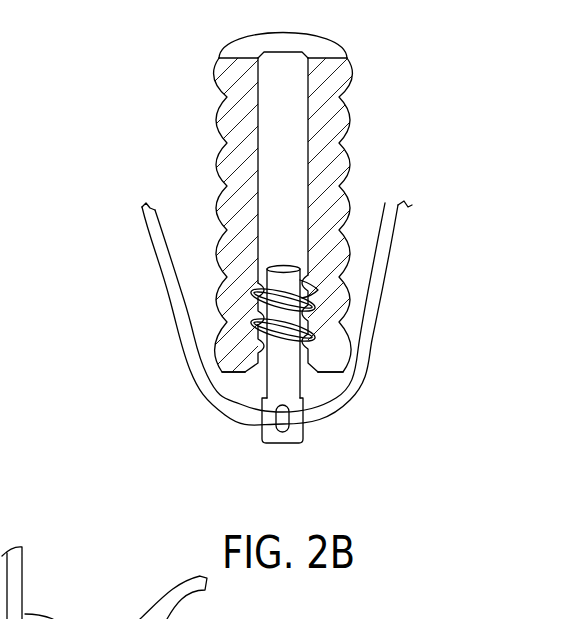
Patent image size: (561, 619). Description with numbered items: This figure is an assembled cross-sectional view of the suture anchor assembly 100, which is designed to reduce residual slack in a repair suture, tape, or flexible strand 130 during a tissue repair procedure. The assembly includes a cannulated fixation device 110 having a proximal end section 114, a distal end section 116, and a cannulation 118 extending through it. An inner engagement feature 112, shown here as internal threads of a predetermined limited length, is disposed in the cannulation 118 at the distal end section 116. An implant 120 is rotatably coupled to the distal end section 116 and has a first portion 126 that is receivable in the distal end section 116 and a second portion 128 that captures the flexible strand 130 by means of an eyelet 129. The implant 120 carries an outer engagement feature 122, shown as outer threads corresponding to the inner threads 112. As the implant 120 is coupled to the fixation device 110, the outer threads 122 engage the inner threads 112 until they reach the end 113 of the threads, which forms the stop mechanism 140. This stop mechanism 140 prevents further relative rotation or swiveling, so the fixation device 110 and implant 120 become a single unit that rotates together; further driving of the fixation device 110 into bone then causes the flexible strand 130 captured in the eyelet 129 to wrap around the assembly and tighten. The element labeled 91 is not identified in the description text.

The suture anchor assembly 100 is at (174, 45).
The cannulated fixation device 110 is at (351, 163).
The inner engagement feature 112 is at (308, 322).
The end of inner threads 113 is at (258, 284).
The proximal end section 114 is at (322, 95).
The distal end section 116 is at (221, 354).
The cannulation 118 is at (299, 178).
The implant 120 is at (248, 438).
The outer engagement feature 122 is at (245, 326).
The first portion 126 is at (303, 301).
The second portion 128 is at (305, 428).
The eyelet 129 is at (283, 444).
The flexible strand 130 is at (174, 302).
The stop mechanism 140 is at (271, 259).
The implant 91 is at (28, 578).